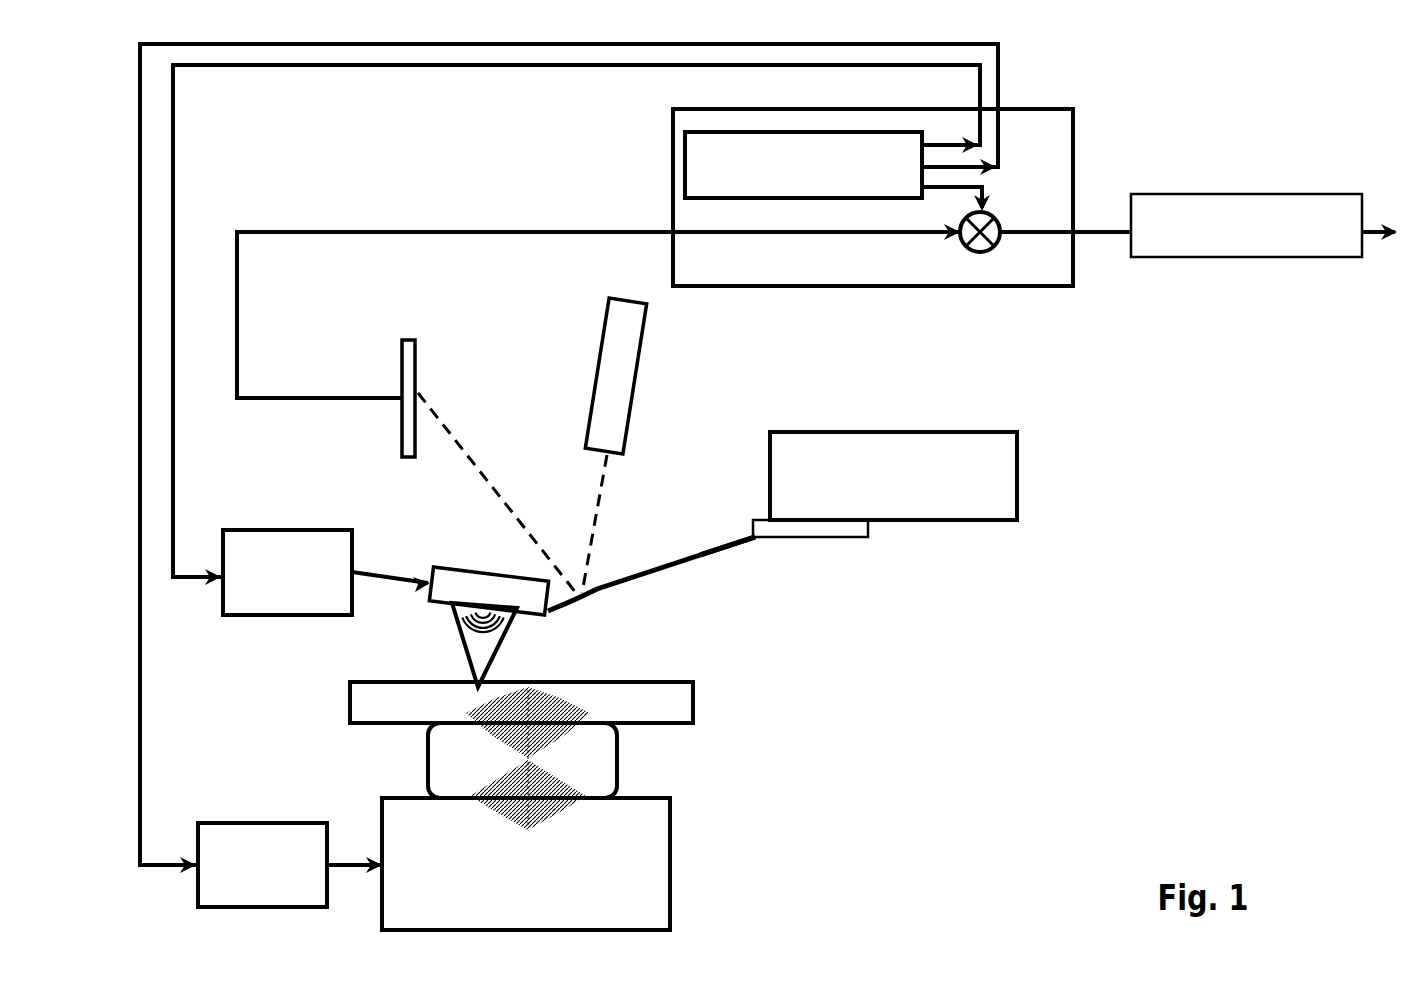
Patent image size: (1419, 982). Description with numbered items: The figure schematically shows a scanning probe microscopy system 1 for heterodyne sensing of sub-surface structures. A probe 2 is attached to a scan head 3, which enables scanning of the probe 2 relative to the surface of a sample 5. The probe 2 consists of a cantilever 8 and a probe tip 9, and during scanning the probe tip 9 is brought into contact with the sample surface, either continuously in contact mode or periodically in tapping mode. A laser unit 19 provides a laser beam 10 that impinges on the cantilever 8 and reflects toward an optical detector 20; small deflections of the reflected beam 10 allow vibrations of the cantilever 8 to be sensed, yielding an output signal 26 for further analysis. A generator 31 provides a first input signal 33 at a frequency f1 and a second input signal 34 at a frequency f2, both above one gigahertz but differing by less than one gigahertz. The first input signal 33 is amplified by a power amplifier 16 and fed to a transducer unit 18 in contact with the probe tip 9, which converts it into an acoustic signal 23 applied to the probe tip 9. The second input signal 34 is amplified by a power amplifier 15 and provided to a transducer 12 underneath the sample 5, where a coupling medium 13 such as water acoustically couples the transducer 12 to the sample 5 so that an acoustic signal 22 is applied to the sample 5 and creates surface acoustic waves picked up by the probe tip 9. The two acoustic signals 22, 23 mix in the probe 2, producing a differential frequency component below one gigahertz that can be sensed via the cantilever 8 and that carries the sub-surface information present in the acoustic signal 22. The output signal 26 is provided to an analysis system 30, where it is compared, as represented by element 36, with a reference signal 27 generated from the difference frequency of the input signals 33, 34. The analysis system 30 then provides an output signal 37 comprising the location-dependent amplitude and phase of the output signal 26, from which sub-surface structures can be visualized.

The scanning probe microscopy system 1 is at (1080, 622).
The probe 2 is at (668, 568).
The scan head 3 is at (1017, 477).
The sample 5 is at (693, 703).
The cantilever 8 is at (732, 557).
The probe tip 9 is at (460, 652).
The laser beam 10 is at (590, 508).
The transducer 12 is at (670, 862).
The coupling medium 13 is at (617, 762).
The power amplifier 15 is at (278, 822).
The power amplifier 16 is at (277, 528).
The transducer unit 18 is at (470, 568).
The laser unit 19 is at (638, 362).
The optical detector 20 is at (418, 345).
The acoustic signal 22 is at (563, 712).
The acoustic signal 23 is at (490, 634).
The output signal 26 is at (325, 397).
The reference signal 27 is at (982, 190).
The analysis system 30 is at (1012, 286).
The generator 31 is at (725, 128).
The first input signal 33 is at (948, 68).
The second input signal 34 is at (1000, 85).
The comparison element 36 is at (965, 248).
The output signal 37 is at (1190, 257).